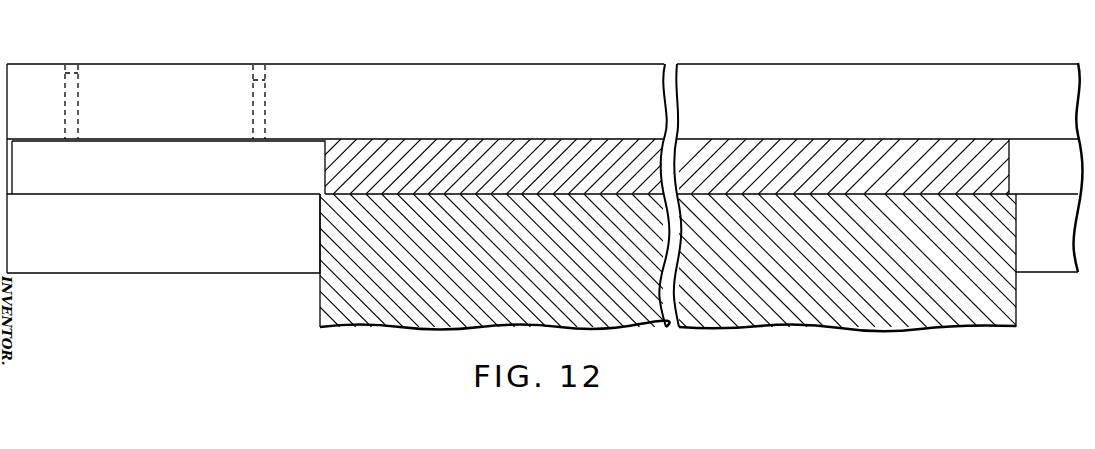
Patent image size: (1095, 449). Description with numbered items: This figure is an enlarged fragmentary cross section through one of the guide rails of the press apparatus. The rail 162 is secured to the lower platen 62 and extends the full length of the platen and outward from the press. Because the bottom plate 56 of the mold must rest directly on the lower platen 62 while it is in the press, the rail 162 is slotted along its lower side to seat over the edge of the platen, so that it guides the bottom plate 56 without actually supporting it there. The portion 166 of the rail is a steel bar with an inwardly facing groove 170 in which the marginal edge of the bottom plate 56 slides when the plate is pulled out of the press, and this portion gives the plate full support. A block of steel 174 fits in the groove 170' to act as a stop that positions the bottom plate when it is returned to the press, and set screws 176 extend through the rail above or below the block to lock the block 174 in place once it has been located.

The rail 162 is at (412, 53).
The set screws 176 is at (78, 84).
The groove 170' is at (179, 148).
The bottom plate 56 is at (780, 150).
The inwardly facing groove 170 is at (1042, 151).
The rail portion 166 is at (1048, 258).
The block of steel 174 is at (186, 186).
The lower platen 62 is at (815, 308).